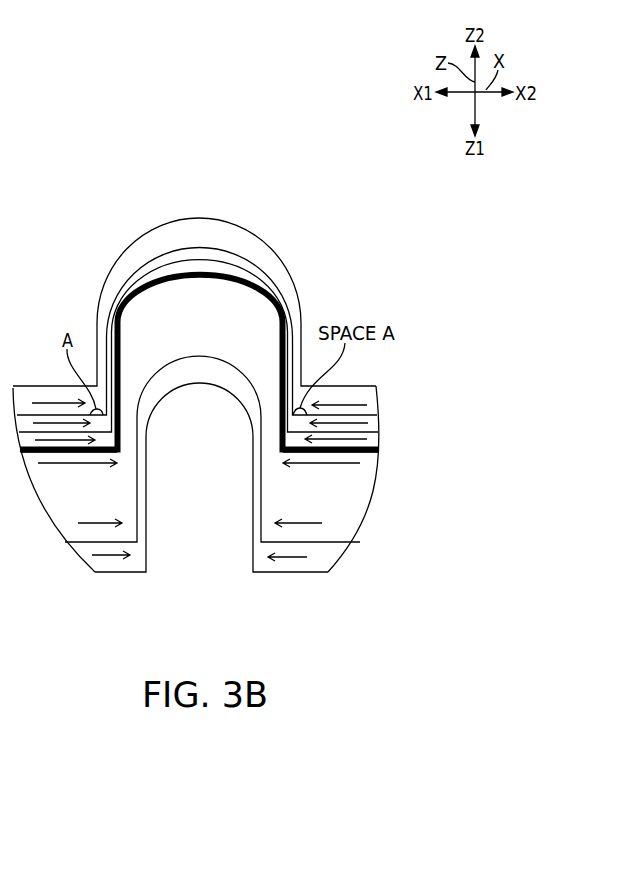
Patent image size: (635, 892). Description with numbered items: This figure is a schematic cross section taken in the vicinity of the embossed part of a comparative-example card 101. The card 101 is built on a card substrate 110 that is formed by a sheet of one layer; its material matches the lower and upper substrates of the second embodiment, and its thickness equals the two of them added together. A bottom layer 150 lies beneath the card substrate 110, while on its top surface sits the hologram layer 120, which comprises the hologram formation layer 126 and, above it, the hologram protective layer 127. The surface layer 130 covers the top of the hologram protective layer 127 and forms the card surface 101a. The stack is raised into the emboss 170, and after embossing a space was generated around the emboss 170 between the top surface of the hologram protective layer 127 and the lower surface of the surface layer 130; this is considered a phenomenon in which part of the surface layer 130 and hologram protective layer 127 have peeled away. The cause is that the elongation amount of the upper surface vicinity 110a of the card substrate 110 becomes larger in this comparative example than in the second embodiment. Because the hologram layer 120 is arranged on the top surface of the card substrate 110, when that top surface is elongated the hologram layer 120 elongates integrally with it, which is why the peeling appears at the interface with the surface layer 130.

The card 101 is at (101, 184).
The card surface 101a is at (33, 387).
The emboss 170 is at (280, 234).
The surface layer 130 is at (380, 397).
The hologram layer 120 is at (505, 503).
The hologram protective layer 127 is at (376, 424).
The hologram formation layer 126 is at (379, 447).
The card substrate 110 is at (352, 523).
The upper surface vicinity 110a is at (365, 455).
The bottom layer 150 is at (332, 558).